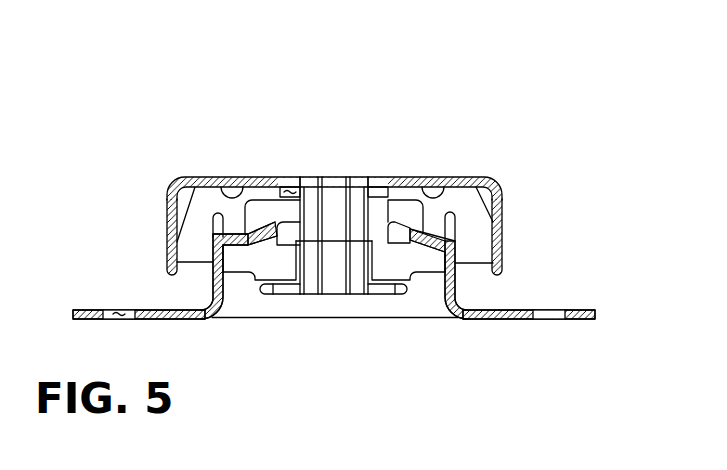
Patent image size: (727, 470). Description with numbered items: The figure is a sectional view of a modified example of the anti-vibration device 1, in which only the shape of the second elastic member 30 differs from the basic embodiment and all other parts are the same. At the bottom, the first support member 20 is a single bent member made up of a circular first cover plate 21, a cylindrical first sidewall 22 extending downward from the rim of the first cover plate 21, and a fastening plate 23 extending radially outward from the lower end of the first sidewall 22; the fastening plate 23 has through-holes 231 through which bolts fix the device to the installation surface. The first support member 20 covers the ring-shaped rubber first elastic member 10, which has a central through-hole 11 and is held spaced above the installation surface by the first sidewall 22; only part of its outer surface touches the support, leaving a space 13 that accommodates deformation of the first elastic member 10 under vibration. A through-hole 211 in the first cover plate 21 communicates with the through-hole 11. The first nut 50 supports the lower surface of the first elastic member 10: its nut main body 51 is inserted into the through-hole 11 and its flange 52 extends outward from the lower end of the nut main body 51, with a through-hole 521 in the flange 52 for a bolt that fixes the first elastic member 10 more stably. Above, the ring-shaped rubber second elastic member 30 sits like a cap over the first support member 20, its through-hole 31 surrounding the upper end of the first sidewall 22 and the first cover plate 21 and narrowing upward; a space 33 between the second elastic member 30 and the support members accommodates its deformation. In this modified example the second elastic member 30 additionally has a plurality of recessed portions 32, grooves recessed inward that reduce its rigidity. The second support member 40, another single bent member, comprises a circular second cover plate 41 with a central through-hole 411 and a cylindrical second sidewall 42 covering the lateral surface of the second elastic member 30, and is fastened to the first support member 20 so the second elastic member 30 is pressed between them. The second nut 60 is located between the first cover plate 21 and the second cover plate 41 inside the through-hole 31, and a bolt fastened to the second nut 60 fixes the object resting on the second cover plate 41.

The anti-vibration device 1 is at (70, 92).
The first elastic member 10 is at (323, 308).
The through-hole 11 is at (366, 292).
The space 13 is at (232, 252).
The first support member 20 is at (350, 226).
The first cover plate 21 is at (411, 192).
The through-hole 211 is at (390, 197).
The first sidewall 22 is at (450, 281).
The fastening plate 23 is at (331, 270).
The through-holes 231 is at (119, 311).
The second elastic member 30 is at (359, 186).
The through-hole 31 is at (290, 188).
The recessed portions 32 is at (229, 189).
The space 33 is at (478, 192).
The second support member 40 is at (273, 193).
The second cover plate 41 is at (304, 155).
The through-hole 411 is at (362, 184).
The second sidewall 42 is at (172, 227).
The first nut 50 is at (349, 271).
The nut main body 51 is at (315, 296).
The flange 52 is at (268, 292).
The through-hole 521 is at (393, 292).
The second nut 60 is at (308, 198).